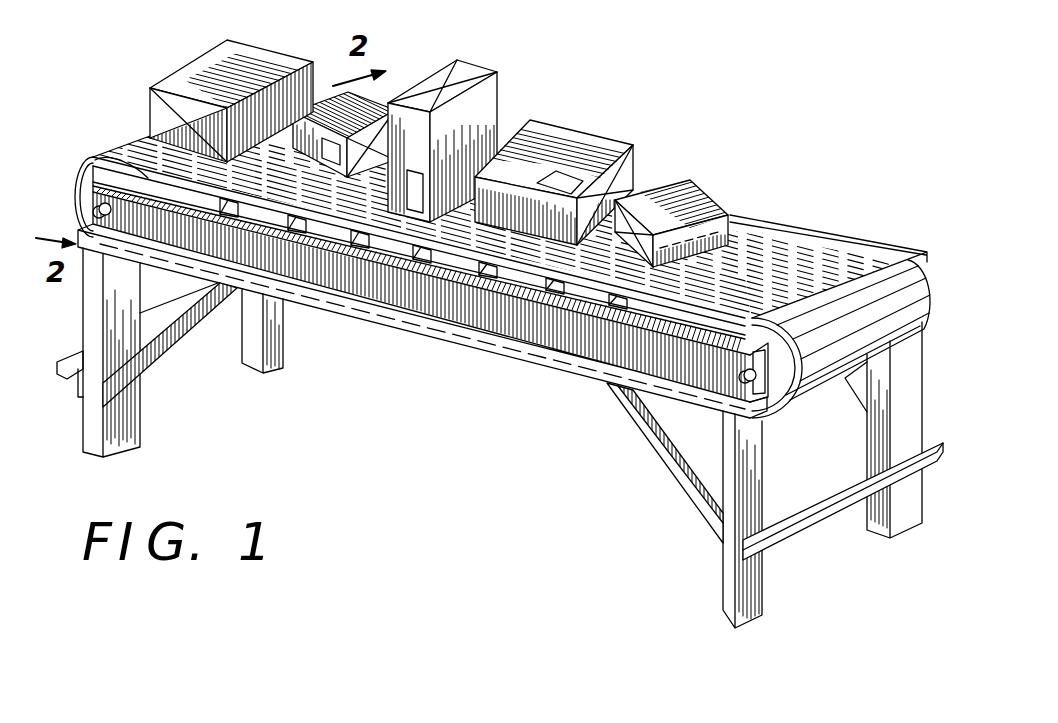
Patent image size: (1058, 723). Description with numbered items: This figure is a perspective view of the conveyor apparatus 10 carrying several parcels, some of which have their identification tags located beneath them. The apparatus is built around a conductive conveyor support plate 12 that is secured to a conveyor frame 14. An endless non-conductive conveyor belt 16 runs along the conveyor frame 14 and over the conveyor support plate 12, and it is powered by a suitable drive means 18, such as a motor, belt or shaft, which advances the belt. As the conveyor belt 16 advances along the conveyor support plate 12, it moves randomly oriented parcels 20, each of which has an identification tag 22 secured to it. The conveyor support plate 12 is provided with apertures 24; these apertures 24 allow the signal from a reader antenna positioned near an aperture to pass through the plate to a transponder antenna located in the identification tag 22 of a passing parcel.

The conveyor apparatus 10 is at (690, 85).
The conveyor support plate 12 is at (462, 262).
The conveyor frame 14 is at (98, 424).
The conveyor belt 16 is at (138, 148).
The drive means 18 is at (117, 163).
The parcels 20 is at (200, 68).
The identification tag 22 is at (157, 88).
The apertures 24 is at (418, 250).